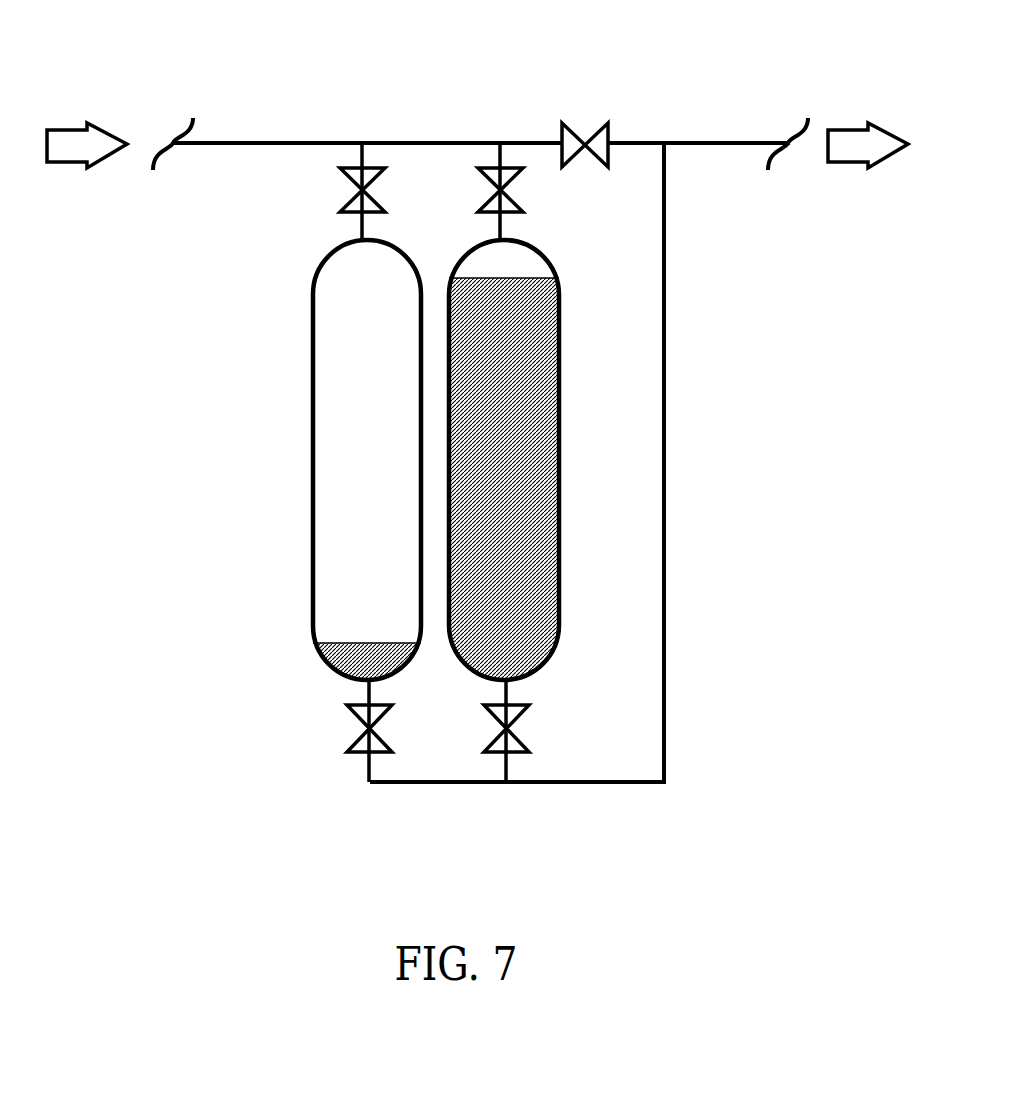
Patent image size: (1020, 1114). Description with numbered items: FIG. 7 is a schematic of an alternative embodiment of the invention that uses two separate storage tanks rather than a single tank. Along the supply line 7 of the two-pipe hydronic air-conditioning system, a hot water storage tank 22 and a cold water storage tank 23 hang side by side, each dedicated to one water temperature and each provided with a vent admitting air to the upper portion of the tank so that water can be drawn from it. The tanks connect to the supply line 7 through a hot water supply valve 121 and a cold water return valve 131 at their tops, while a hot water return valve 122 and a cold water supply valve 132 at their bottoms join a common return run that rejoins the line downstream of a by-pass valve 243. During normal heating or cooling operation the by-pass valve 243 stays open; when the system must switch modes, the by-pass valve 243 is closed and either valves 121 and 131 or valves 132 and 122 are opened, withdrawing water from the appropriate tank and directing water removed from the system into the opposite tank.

The supply line 7 is at (271, 139).
The hot water supply valve 121 is at (360, 165).
The cold water return valve 131 is at (505, 165).
The by-pass valve 243 is at (598, 128).
The hot water storage tank 22 is at (309, 387).
The cold water storage tank 23 is at (562, 397).
The hot water return valve 122 is at (363, 757).
The cold water supply valve 132 is at (514, 757).